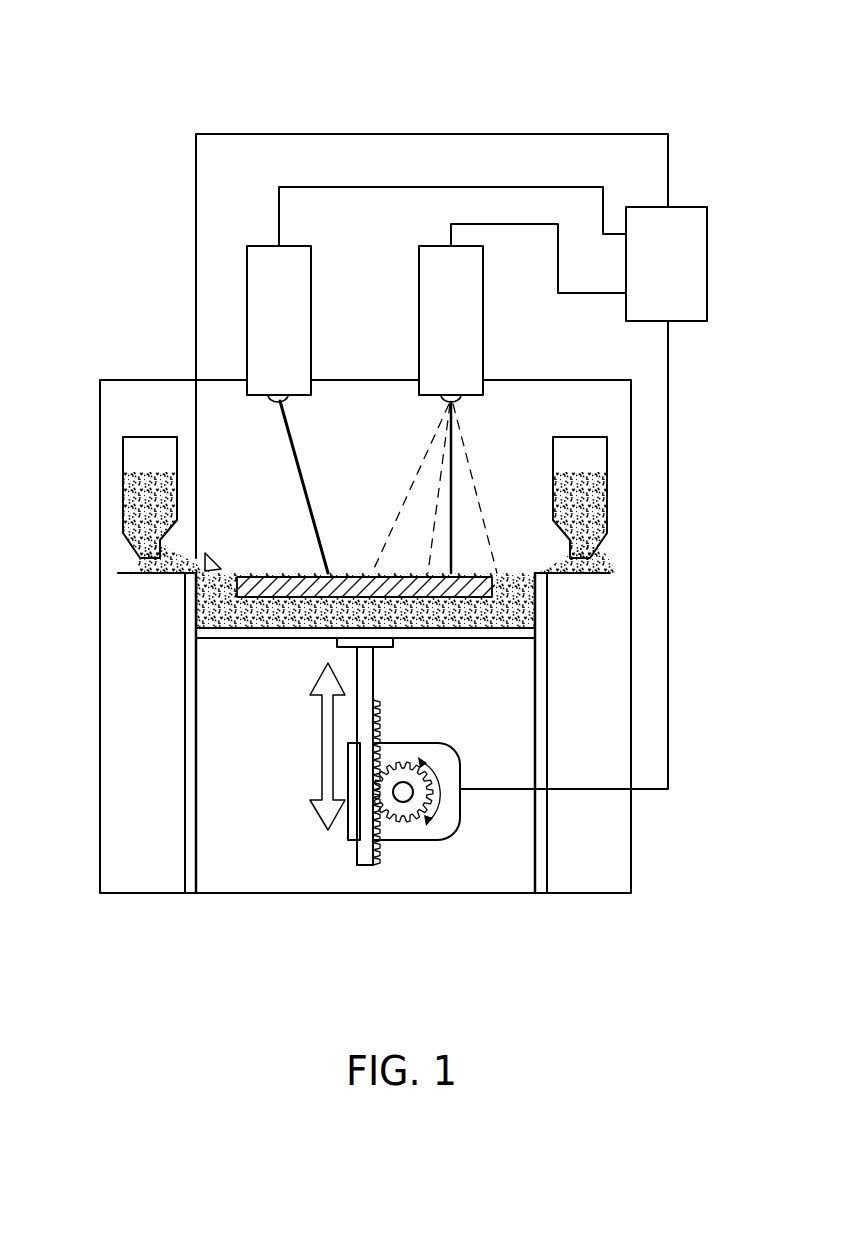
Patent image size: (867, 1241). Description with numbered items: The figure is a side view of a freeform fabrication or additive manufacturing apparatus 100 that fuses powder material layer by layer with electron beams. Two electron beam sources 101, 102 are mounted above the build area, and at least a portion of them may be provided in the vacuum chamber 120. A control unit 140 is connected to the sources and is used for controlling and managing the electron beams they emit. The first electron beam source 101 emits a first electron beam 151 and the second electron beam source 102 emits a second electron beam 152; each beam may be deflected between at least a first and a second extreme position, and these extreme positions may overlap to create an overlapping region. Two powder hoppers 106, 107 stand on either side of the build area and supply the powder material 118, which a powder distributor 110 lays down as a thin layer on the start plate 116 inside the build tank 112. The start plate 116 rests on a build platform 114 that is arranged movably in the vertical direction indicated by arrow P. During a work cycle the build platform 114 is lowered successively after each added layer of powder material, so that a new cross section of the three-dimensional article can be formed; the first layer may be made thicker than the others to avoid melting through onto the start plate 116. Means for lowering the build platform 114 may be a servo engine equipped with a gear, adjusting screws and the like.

The additive manufacturing apparatus 100 is at (122, 59).
The first electron beam source 101 is at (295, 355).
The second electron beam source 102 is at (467, 355).
The powder hopper 106 is at (125, 508).
The powder hopper 107 is at (608, 511).
The powder distributor 110 is at (240, 528).
The build tank 112 is at (196, 672).
The build platform 114 is at (253, 632).
The start plate 116 is at (348, 587).
The powder material 118 is at (283, 573).
The vacuum chamber 120 is at (632, 667).
The control unit 140 is at (451, 461).
The first electron beam 151 is at (305, 487).
The second electron beam 152 is at (453, 485).
The arrow P is at (320, 761).